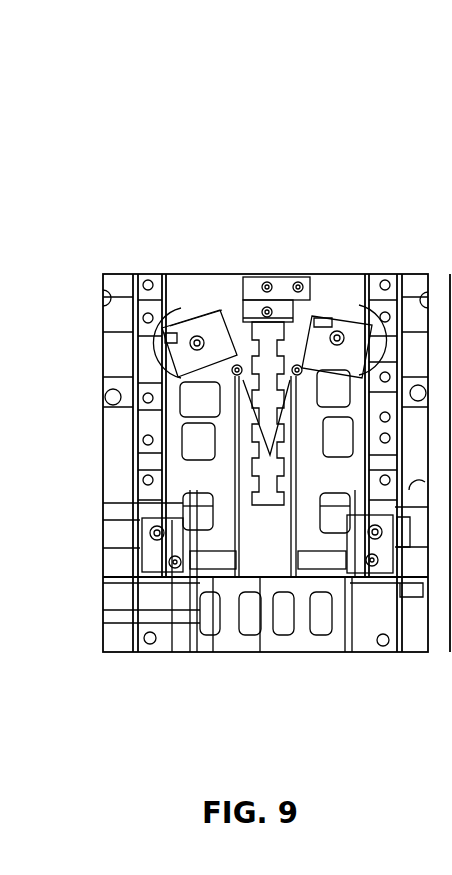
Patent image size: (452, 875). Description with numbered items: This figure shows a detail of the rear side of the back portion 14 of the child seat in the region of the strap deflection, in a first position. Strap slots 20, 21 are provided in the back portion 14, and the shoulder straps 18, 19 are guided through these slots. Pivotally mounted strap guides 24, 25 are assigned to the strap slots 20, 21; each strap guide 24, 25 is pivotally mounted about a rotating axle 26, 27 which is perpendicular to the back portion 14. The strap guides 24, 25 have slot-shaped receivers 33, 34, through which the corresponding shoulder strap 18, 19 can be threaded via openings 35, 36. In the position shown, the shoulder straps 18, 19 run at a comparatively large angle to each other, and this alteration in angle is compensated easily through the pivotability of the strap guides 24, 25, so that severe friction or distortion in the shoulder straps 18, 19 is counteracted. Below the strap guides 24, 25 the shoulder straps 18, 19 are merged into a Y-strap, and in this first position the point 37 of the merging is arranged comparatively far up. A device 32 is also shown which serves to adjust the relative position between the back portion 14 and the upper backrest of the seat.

The back portion 14 is at (278, 297).
The shoulder strap 18 is at (307, 407).
The shoulder strap 19 is at (222, 407).
The strap slot 20 is at (364, 318).
The strap slot 21 is at (173, 327).
The strap guide 24 is at (237, 372).
The strap guide 25 is at (168, 353).
The rotating axle 26 is at (328, 316).
The rotating axle 27 is at (199, 340).
The device 32 is at (336, 335).
The receiver 33 is at (177, 330).
The receiver 34 is at (338, 318).
The opening 35 is at (187, 327).
The opening 36 is at (337, 342).
The point 37 is at (200, 547).